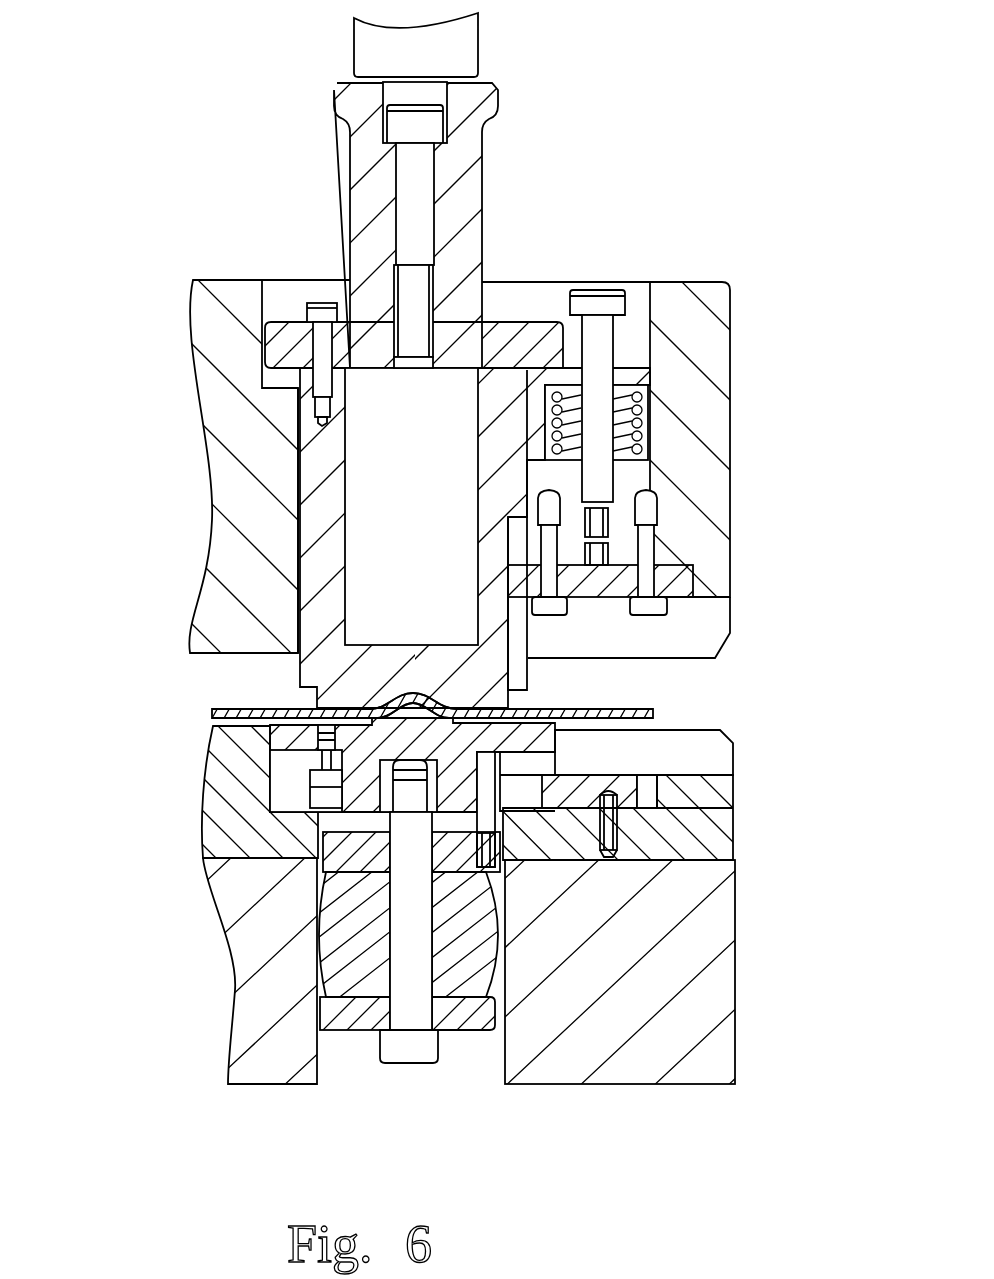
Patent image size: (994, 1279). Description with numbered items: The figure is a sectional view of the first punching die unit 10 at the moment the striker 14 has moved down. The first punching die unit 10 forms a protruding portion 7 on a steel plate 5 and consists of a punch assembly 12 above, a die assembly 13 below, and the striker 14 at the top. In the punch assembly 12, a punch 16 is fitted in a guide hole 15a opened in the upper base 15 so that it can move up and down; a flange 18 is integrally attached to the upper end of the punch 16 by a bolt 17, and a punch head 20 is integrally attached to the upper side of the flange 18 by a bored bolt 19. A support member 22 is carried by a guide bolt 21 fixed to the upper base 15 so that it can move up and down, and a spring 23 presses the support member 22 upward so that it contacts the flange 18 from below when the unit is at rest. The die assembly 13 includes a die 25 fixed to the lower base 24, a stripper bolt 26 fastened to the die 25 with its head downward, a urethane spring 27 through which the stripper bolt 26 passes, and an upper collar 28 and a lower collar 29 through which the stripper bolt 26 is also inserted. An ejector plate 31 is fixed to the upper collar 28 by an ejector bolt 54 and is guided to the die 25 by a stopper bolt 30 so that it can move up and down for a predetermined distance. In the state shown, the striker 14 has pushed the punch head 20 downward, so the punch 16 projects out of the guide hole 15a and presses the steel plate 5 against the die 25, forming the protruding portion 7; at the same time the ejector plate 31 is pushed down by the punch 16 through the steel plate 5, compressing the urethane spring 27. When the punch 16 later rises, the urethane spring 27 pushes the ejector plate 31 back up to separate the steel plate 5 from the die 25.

The steel plate 5 is at (580, 710).
The protruding portion 7 is at (397, 701).
The first punching die unit 10 is at (679, 91).
The punch assembly 12 is at (172, 336).
The die assembly 13 is at (190, 888).
The striker 14 is at (387, 48).
The upper base 15 is at (233, 541).
The guide hole 15a is at (310, 468).
The punch 16 is at (405, 678).
The bolt 17 is at (295, 347).
The flange 18 is at (530, 347).
The bored bolt 19 is at (413, 190).
The punch head 20 is at (460, 170).
The guide bolt 21 is at (597, 473).
The support member 22 is at (637, 380).
The spring 23 is at (640, 410).
The lower base 24 is at (692, 837).
The die 25 is at (268, 730).
The stripper bolt 26 is at (405, 1000).
The urethane spring 27 is at (487, 940).
The upper collar 28 is at (340, 850).
The lower collar 29 is at (337, 1013).
The stopper bolt 30 is at (327, 762).
The ejector plate 31 is at (557, 745).
The ejector bolt 54 is at (497, 782).